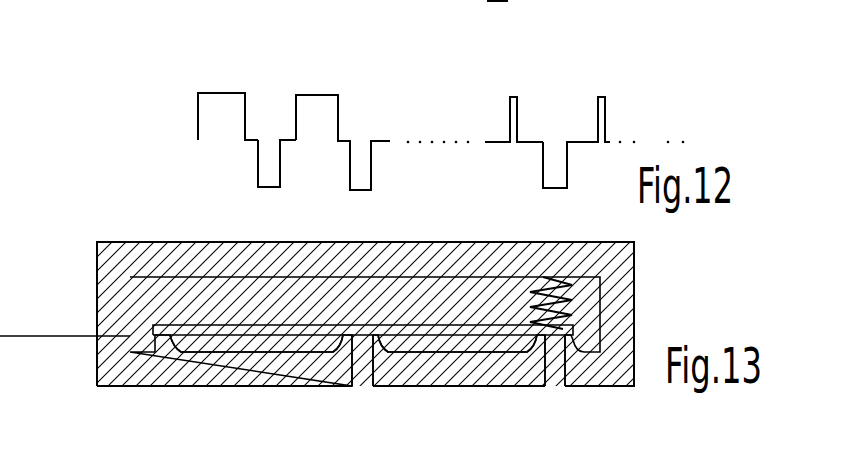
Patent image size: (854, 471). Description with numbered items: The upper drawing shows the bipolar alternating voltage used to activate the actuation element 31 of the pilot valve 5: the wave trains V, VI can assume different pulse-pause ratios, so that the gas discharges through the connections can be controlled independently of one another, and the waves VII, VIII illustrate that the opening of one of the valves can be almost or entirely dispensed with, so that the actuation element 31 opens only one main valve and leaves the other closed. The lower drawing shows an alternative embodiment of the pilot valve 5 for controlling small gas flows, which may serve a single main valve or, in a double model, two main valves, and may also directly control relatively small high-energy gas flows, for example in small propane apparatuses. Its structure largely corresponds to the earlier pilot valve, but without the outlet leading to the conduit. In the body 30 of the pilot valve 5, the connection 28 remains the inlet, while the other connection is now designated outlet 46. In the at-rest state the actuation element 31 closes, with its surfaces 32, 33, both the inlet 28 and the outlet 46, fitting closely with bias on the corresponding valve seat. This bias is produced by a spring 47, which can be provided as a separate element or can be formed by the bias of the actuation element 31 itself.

In FIG. 12, the wave train V is at (233, 86).
In FIG. 12, the wave train VI is at (250, 162).
In FIG. 12, the wave VII is at (522, 114).
In FIG. 12, the wave VIII is at (571, 173).
In FIG. 13, the pilot valve 5 is at (394, 313).
In FIG. 13, the housing 30 is at (637, 280).
In FIG. 13, the actuation element 31 is at (297, 326).
In FIG. 13, the surface 32 is at (323, 353).
In FIG. 13, the inlet 28 is at (363, 382).
In FIG. 13, the surface 33 is at (515, 387).
In FIG. 13, the outlet 46 is at (558, 387).
In FIG. 13, the spring 47 is at (533, 287).